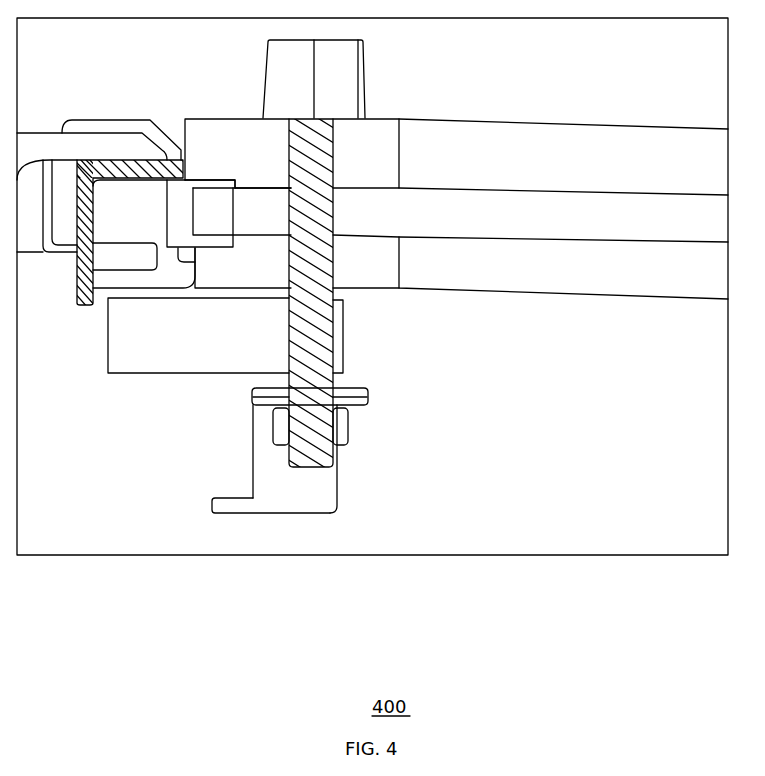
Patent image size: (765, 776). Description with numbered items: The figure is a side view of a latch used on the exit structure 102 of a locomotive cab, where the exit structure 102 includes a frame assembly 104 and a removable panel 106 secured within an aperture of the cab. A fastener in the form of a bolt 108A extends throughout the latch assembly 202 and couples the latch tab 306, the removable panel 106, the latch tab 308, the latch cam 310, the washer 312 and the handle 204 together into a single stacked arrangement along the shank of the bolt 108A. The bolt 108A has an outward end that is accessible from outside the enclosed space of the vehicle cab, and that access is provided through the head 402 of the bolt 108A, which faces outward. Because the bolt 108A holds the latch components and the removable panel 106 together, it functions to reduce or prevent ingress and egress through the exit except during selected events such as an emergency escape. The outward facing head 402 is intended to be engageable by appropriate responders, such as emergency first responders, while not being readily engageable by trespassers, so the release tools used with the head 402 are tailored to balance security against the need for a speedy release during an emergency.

The exit structure 102 is at (133, 158).
The frame assembly 104 is at (166, 211).
The removable panel 106 is at (456, 220).
The bolt 108A is at (336, 293).
The latch assembly 202 is at (247, 475).
The handle 204 is at (226, 516).
The latch tab 306 is at (390, 118).
The latch tab 308 is at (375, 296).
The latch cam 310 is at (157, 376).
The washer 312 is at (357, 411).
The head 402 is at (249, 42).